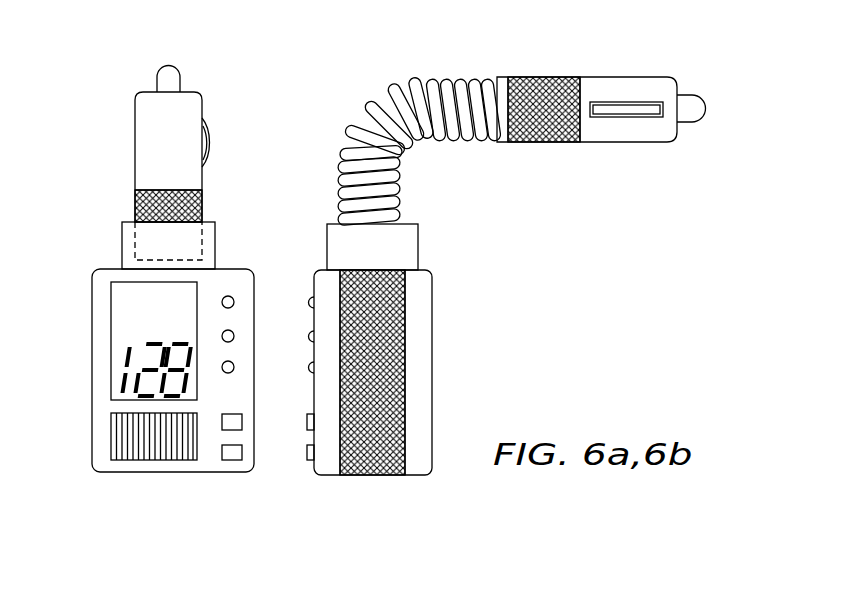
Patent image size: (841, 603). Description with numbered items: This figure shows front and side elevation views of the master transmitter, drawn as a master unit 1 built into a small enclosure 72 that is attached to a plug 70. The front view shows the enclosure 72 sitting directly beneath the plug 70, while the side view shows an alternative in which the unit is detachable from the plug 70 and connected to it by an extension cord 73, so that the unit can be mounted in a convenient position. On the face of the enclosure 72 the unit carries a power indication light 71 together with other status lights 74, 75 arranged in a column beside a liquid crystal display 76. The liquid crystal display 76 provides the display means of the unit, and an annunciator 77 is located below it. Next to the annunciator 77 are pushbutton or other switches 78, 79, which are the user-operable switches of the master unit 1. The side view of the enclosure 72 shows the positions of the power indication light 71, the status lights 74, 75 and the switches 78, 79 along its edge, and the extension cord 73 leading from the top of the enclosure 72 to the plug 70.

In FIG. 6A, the master unit 1 is at (113, 269).
In FIG. 6B, the master unit 1 is at (330, 269).
In FIG. 6A, the plug 70 is at (137, 104).
In FIG. 6B, the plug 70 is at (580, 77).
In FIG. 6A, the power indication light 71 is at (270, 288).
In FIG. 6B, the power indication light 71 is at (309, 303).
In FIG. 6A, the enclosure 72 is at (268, 490).
In FIG. 6B, the enclosure 72 is at (337, 475).
In FIG. 6B, the extension cord 73 is at (366, 116).
In FIG. 6A, the status light 74 is at (270, 323).
In FIG. 6B, the status light 74 is at (309, 337).
In FIG. 6A, the status light 75 is at (270, 356).
In FIG. 6B, the status light 75 is at (309, 368).
In FIG. 6A, the liquid crystal display 76 is at (106, 349).
In FIG. 6A, the annunciator 77 is at (173, 461).
In FIG. 6A, the switch 78 is at (270, 409).
In FIG. 6B, the switch 78 is at (307, 422).
In FIG. 6A, the switch 79 is at (270, 441).
In FIG. 6B, the switch 79 is at (307, 452).